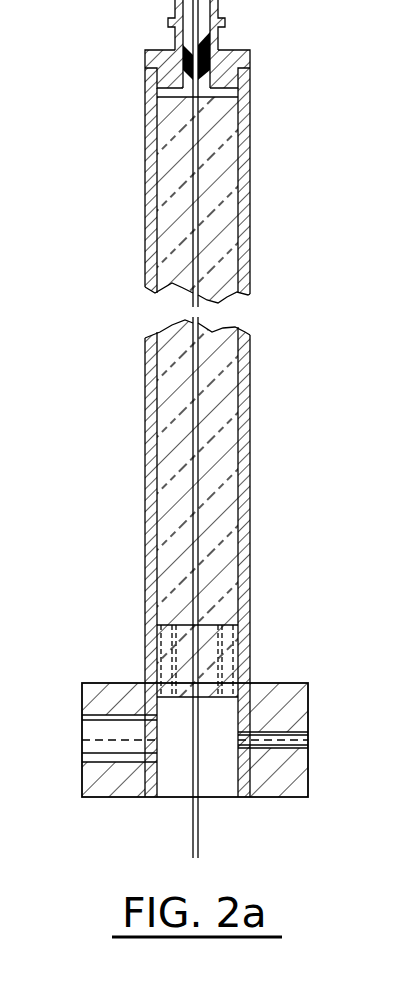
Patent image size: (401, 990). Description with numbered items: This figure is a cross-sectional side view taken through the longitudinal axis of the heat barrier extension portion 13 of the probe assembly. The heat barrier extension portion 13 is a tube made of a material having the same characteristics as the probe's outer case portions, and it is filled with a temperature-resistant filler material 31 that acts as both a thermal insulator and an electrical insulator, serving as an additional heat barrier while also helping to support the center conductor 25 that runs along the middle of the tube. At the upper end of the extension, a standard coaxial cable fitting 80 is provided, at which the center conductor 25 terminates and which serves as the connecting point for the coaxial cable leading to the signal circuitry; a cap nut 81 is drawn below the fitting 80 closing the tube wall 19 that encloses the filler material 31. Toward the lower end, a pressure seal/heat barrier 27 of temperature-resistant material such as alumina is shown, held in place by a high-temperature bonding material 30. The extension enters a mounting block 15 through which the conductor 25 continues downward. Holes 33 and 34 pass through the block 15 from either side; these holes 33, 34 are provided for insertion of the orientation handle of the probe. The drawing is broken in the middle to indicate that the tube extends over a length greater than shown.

The heat barrier extension portion 13 is at (253, 85).
The coaxial cable fitting 80 is at (170, 42).
The cap nut 81 is at (152, 100).
The tube 19 is at (252, 167).
The filler material 31 is at (228, 220).
The high-temperature bonding material 30 is at (165, 625).
The pressure seal/heat barrier 27 is at (218, 624).
The block 15 is at (308, 705).
The hole 34 is at (82, 727).
The hole 33 is at (308, 742).
The conductor 25 is at (198, 832).